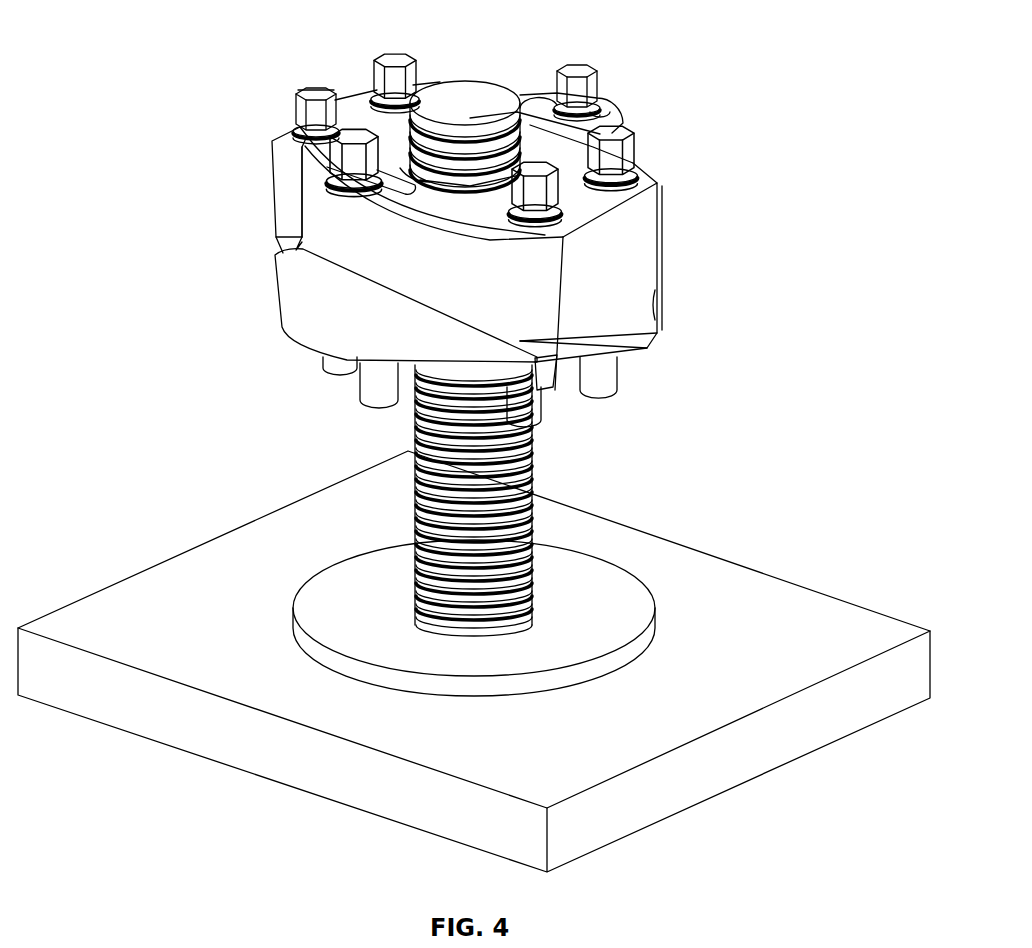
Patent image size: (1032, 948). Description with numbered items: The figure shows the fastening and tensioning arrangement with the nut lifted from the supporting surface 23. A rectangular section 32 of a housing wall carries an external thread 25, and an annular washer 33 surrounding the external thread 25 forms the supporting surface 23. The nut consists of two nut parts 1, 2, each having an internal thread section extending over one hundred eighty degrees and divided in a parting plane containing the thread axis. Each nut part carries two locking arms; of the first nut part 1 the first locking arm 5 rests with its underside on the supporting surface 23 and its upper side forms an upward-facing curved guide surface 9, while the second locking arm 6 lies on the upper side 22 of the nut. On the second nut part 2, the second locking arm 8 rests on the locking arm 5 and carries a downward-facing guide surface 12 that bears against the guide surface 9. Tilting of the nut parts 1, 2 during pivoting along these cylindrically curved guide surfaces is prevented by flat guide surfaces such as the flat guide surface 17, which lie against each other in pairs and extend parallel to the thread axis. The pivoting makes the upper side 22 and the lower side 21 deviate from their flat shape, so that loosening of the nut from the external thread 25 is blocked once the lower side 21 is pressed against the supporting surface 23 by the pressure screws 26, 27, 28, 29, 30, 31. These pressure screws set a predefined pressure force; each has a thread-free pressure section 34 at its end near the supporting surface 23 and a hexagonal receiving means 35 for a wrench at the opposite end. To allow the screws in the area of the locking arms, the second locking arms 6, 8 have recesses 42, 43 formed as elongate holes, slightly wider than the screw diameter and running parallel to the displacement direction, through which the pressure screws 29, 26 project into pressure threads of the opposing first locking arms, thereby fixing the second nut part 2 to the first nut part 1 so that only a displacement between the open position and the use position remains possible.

The first nut part 1 is at (398, 144).
The second nut part 2 is at (598, 276).
The first locking arm 5 is at (440, 348).
The second locking arm 6 is at (620, 108).
The second locking arm 8 is at (328, 222).
The guide surface 9 is at (292, 245).
The guide surface 12 is at (657, 334).
The flat guide surface 17 is at (288, 168).
The lower side 21 is at (633, 355).
The upper side 22 is at (363, 114).
The supporting surface 23 is at (491, 661).
The external thread 25 is at (466, 100).
The pressure screw 26 is at (340, 120).
The pressure screw 27 is at (320, 90).
The pressure screw 28 is at (400, 58).
The pressure screw 29 is at (577, 70).
The pressure screw 30 is at (613, 132).
The pressure screw 31 is at (545, 158).
The rectangular section of housing wall 32 is at (806, 646).
The annular washer 33 is at (378, 612).
The pressure section 34 is at (395, 400).
The receiving means 35 is at (305, 108).
The recess 42 is at (540, 104).
The recess 43 is at (413, 192).